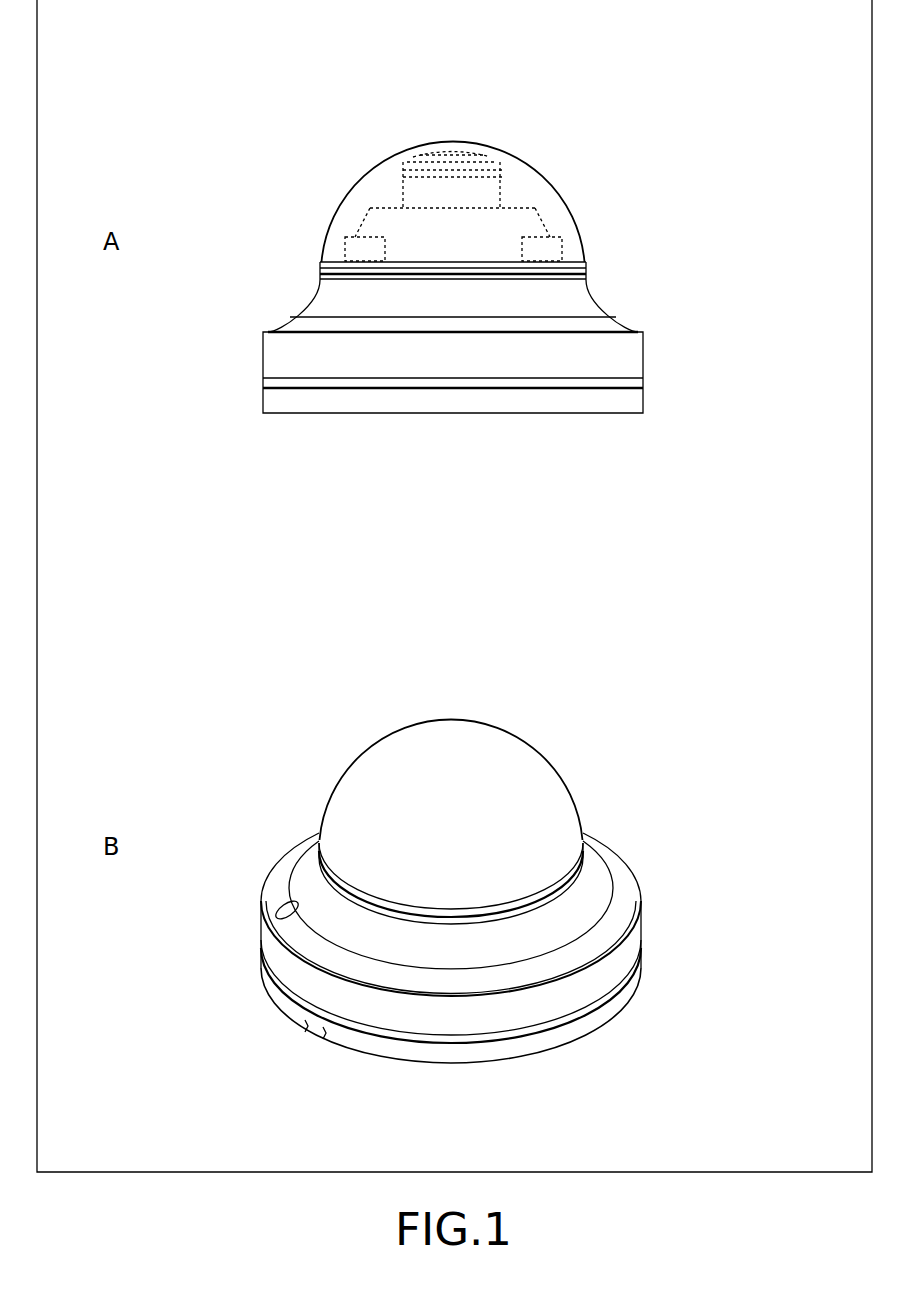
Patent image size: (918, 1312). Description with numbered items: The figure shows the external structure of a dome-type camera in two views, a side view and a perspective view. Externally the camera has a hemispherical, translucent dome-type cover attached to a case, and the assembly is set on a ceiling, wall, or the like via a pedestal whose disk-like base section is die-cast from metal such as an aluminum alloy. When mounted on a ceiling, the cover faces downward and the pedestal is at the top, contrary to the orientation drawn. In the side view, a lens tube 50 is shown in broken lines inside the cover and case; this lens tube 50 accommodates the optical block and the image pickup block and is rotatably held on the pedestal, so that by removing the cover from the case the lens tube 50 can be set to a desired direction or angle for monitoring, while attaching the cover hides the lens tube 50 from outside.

The lens tube 50 is at (490, 197).